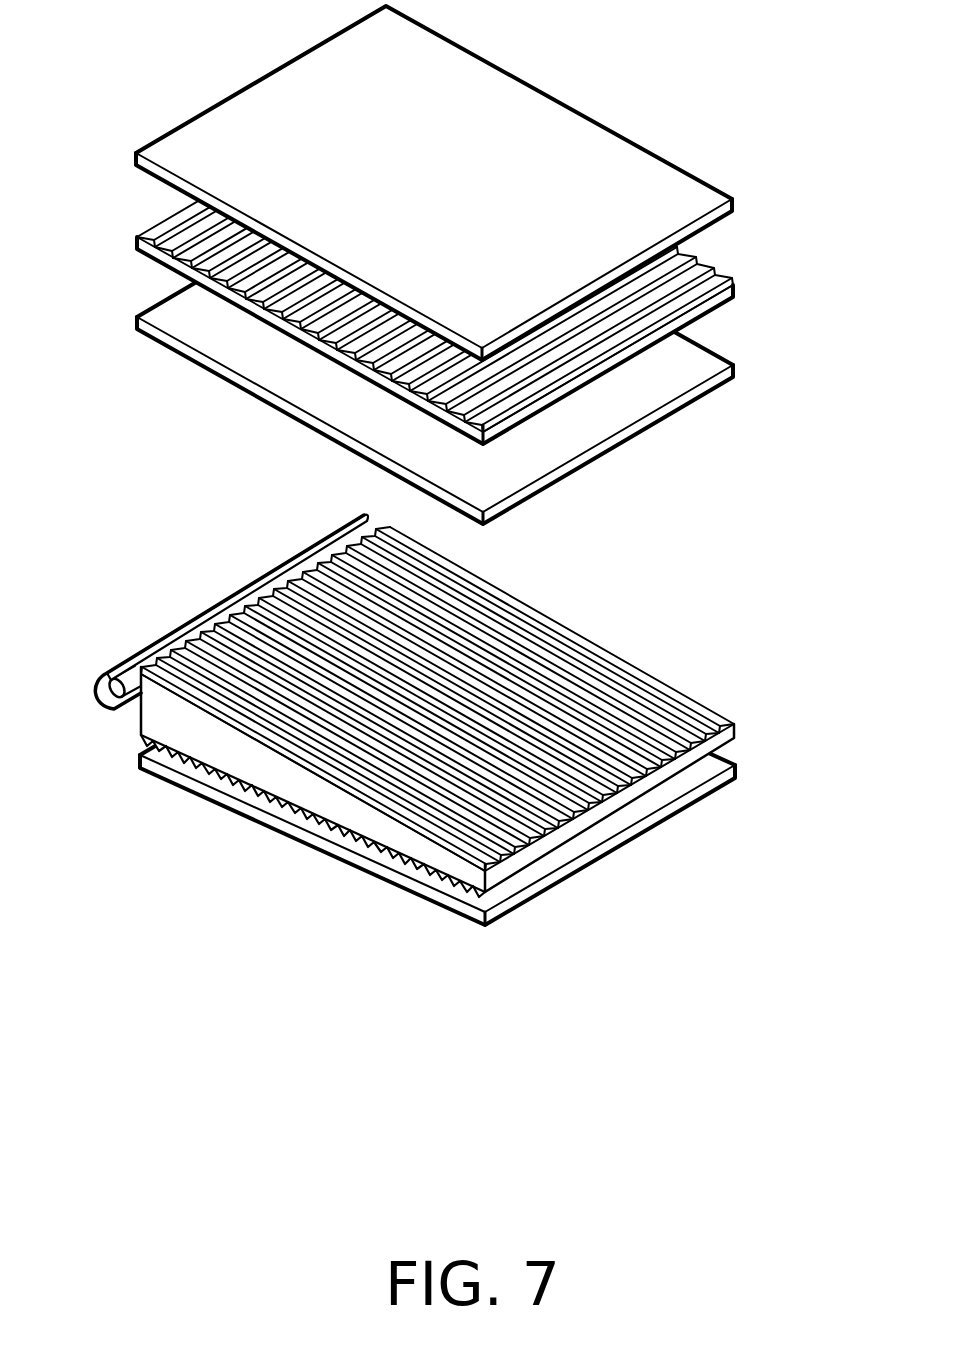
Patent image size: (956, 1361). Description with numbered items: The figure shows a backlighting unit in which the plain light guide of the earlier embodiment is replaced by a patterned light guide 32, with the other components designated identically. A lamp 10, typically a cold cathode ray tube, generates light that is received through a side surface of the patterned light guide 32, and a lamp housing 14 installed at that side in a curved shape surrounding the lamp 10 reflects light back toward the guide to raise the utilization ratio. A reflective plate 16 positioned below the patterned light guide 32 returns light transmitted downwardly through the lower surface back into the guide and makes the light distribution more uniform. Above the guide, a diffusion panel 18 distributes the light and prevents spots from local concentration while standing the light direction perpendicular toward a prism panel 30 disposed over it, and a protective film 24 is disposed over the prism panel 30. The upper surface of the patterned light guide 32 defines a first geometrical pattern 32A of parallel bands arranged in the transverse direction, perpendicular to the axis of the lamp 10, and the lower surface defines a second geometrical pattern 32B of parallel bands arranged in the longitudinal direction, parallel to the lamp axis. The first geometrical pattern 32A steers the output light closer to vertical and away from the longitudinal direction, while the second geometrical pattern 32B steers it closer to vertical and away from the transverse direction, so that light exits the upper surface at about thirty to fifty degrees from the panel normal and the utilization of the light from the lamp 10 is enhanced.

The lamp 10 is at (112, 712).
The lamp housing 14 is at (108, 677).
The reflective plate 16 is at (322, 840).
The diffusion panel 18 is at (622, 417).
The protective film 24 is at (555, 118).
The prism panel 30 is at (732, 292).
The patterned light guide 32 is at (466, 765).
The first geometrical pattern 32A is at (632, 680).
The second geometrical pattern 32B is at (415, 855).